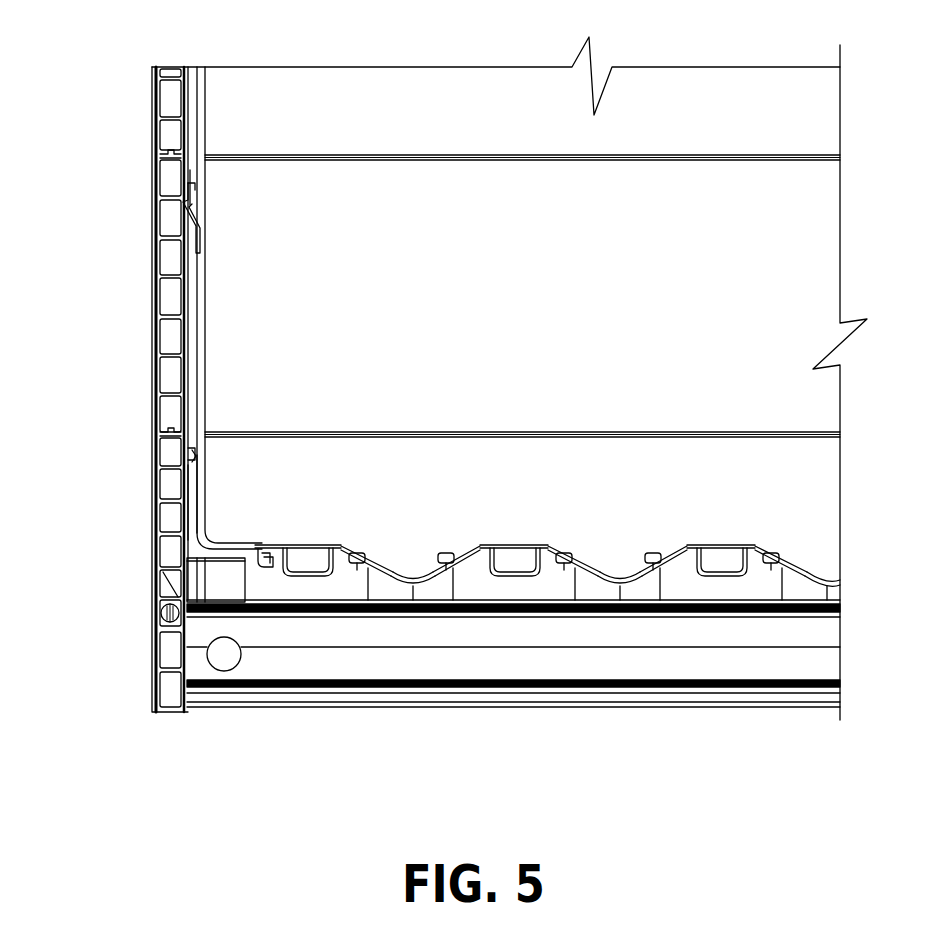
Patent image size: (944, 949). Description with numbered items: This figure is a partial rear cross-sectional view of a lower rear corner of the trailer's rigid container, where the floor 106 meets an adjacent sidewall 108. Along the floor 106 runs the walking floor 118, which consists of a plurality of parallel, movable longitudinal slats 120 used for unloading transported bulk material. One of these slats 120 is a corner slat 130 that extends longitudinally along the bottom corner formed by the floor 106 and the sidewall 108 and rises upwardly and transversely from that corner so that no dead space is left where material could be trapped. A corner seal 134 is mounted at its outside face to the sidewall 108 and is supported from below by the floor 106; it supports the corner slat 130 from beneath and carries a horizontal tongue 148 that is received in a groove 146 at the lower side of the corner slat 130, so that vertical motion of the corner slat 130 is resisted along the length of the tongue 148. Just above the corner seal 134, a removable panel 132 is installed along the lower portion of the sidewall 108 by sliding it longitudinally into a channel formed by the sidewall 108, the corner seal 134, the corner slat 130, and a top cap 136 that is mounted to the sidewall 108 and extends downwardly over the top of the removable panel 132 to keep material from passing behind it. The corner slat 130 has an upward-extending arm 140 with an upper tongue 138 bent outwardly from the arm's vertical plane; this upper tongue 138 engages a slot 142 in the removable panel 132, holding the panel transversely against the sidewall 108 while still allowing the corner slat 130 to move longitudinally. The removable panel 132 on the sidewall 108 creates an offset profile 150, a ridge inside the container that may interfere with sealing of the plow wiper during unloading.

The floor 106 is at (203, 629).
The sidewall 108 is at (172, 133).
The walking floor 118 is at (534, 572).
The longitudinal slat 120 is at (508, 545).
The corner slat 130 is at (312, 545).
The removable panel 132 is at (193, 338).
The corner seal 134 is at (190, 552).
The top cap 136 is at (190, 222).
The upper tongue 138 is at (196, 455).
The upward-extending arm 140 is at (197, 497).
The slot 142 is at (166, 453).
The groove 146 is at (270, 556).
The horizontal tongue 148 is at (258, 553).
The offset profile 150 is at (205, 179).